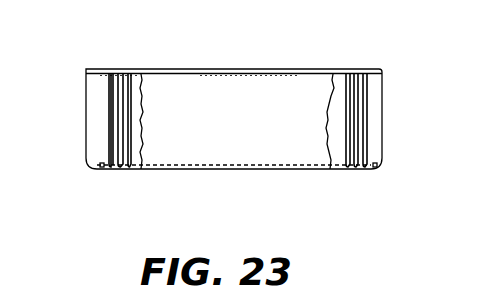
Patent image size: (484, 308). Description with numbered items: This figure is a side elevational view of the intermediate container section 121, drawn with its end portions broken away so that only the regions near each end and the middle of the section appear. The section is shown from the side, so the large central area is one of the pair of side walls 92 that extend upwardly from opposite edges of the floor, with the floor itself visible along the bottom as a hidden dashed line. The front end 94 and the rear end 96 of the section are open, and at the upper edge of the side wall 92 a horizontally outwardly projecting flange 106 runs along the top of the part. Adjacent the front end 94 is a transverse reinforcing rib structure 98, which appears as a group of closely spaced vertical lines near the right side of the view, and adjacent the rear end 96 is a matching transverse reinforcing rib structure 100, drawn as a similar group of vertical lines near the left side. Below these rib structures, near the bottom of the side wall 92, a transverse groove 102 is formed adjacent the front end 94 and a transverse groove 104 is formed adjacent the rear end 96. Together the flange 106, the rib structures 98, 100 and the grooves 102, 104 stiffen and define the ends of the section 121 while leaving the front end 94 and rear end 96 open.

The side wall 92 is at (243, 130).
The front end 94 is at (383, 83).
The rear end 96 is at (88, 78).
The transverse reinforcing rib structure 98 is at (369, 118).
The transverse reinforcing rib structure 100 is at (109, 128).
The transverse groove 102 is at (359, 168).
The transverse groove 104 is at (115, 167).
The flange 106 is at (322, 69).
The intermediate container section 121 is at (257, 168).